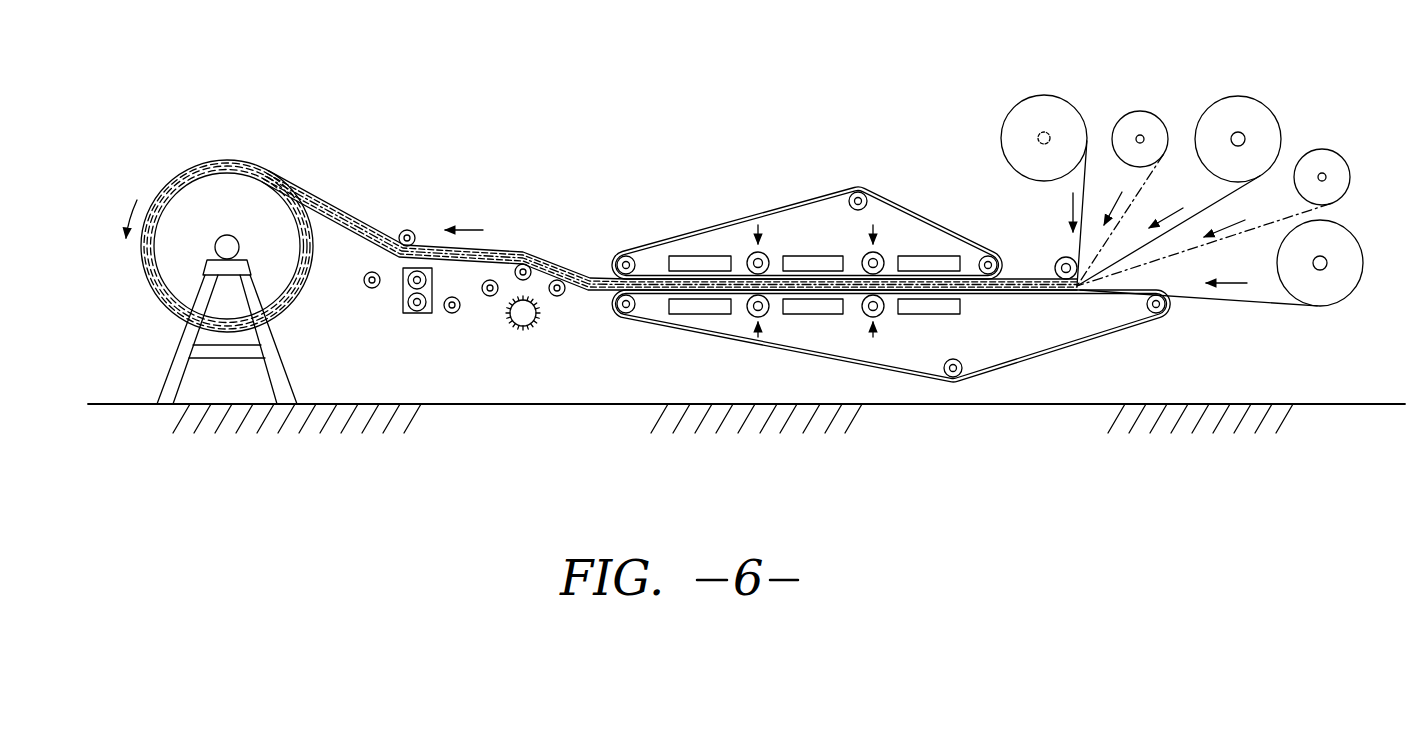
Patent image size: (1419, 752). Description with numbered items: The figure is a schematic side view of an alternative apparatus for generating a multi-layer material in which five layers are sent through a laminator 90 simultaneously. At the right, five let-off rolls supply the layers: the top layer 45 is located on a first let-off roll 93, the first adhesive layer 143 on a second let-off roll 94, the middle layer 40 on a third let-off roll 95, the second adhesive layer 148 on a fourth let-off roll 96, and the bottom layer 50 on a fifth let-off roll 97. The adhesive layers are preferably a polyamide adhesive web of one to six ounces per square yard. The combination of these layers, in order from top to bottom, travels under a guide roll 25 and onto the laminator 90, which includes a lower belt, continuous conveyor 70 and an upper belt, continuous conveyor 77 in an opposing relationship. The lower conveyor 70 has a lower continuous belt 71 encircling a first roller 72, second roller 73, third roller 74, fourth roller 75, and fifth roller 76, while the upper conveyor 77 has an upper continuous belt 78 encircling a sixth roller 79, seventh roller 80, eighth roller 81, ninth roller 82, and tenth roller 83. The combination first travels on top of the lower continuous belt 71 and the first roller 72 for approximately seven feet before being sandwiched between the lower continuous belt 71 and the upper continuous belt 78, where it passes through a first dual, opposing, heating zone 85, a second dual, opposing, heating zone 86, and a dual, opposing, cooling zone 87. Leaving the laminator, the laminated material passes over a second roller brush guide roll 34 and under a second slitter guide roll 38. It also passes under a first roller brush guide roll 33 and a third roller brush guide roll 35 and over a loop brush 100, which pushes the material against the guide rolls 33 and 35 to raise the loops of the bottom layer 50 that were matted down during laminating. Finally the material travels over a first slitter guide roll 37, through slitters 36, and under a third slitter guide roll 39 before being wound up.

The guide roll 25 is at (1061, 258).
The first roller brush guide roll 33 is at (560, 296).
The second roller brush guide roll 34 is at (528, 265).
The third roller brush guide roll 35 is at (490, 297).
The slitters 36 is at (414, 314).
The first slitter guide roll 37 is at (452, 314).
The second slitter guide roll 38 is at (413, 233).
The third slitter guide roll 39 is at (368, 288).
The middle layer 40 is at (323, 202).
The top layer 45 is at (241, 162).
The bottom layer 50 is at (371, 243).
The lower belt, continuous conveyor 70 is at (891, 344).
The lower continuous belt 71 is at (1093, 337).
The first roller 72 is at (1148, 313).
The second roller 73 is at (958, 360).
The third roller 74 is at (632, 315).
The fourth roller 75 is at (752, 317).
The fifth roller 76 is at (870, 318).
The upper belt, continuous conveyor 77 is at (802, 273).
The upper continuous belt 78 is at (897, 204).
The sixth roller 79 is at (1000, 257).
The seventh roller 80 is at (333, 124).
The eighth roller 81 is at (766, 256).
The ninth roller 82 is at (630, 256).
The tenth roller 83 is at (858, 192).
The first dual, opposing, heating zone 85 is at (929, 255).
The second dual, opposing, heating zone 86 is at (827, 253).
The dual, opposing, cooling zone 87 is at (714, 254).
The laminator 90 is at (1154, 167).
The first let-off roll 93 is at (1043, 107).
The second let-off roll 94 is at (1138, 116).
The third let-off roll 95 is at (1237, 108).
The fourth let-off roll 96 is at (1320, 158).
The fifth let-off roll 97 is at (1337, 237).
The loop brush 100 is at (526, 330).
The first adhesive layer 143 is at (279, 178).
The second adhesive layer 148 is at (365, 233).